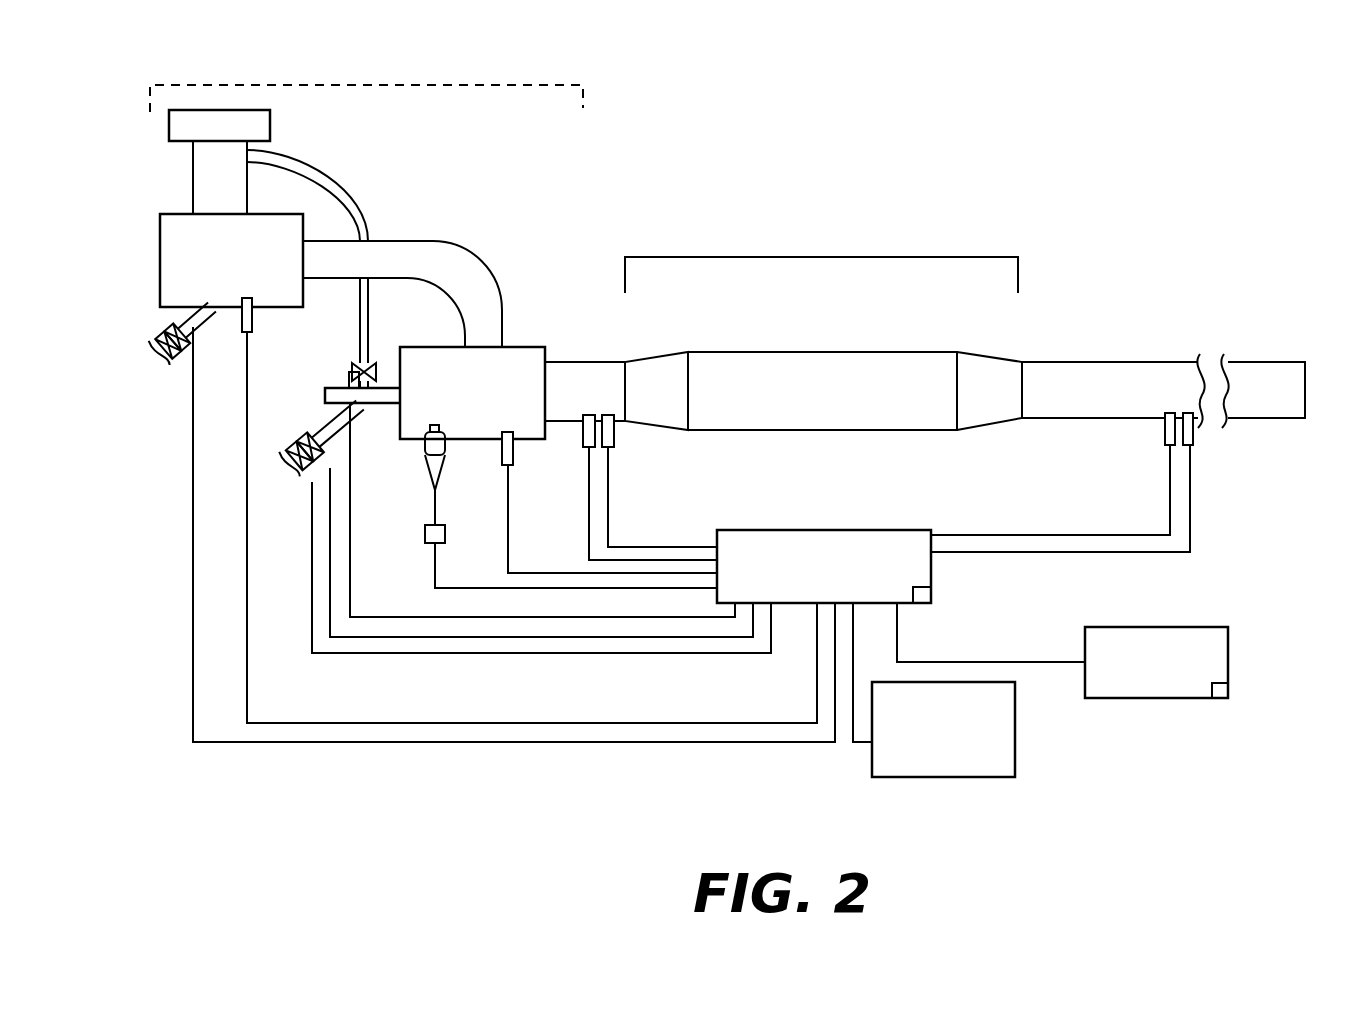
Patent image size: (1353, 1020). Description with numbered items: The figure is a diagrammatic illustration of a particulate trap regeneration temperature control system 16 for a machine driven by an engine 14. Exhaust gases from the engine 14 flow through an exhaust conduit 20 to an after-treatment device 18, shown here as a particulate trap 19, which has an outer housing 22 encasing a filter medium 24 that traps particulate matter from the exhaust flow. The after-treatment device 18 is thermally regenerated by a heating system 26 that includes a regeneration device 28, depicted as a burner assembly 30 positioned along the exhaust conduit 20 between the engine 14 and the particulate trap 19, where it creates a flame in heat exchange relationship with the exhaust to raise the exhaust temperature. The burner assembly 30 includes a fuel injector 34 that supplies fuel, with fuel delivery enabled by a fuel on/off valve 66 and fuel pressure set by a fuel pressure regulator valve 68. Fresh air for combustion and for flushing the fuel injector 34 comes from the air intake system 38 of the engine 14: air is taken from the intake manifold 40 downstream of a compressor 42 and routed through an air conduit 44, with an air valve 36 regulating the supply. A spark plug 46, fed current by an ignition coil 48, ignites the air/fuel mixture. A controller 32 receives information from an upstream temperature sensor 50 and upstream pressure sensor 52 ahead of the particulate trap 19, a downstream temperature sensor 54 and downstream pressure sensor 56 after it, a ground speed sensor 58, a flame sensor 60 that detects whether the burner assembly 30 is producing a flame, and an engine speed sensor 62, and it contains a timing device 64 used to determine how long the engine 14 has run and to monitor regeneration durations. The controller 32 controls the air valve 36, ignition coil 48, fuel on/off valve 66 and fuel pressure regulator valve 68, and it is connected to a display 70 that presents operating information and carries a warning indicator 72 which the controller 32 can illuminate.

The engine 14 is at (160, 232).
The particulate trap regeneration temperature control system 16 is at (823, 302).
The after-treatment device 18 is at (880, 257).
The particulate trap 19 is at (968, 336).
The exhaust conduit 20 is at (455, 241).
The outer housing 22 is at (820, 352).
The filter medium 24 is at (743, 431).
The heating system 26 is at (562, 85).
The regeneration device 28 is at (530, 403).
The burner assembly 30 is at (433, 347).
The controller 32 is at (860, 540).
The fuel injector 34 is at (337, 388).
The air valve 36 is at (383, 372).
The air intake system 38 is at (387, 230).
The intake manifold 40 is at (193, 180).
The compressor 42 is at (169, 118).
The air conduit 44 is at (357, 205).
The spark plug 46 is at (423, 447).
The ignition coil 48 is at (425, 533).
The upstream temperature sensor 50 is at (582, 446).
The upstream pressure sensor 52 is at (614, 446).
The downstream temperature sensor 54 is at (1165, 444).
The downstream pressure sensor 56 is at (1193, 444).
The ground speed sensor 58 is at (1016, 757).
The flame sensor 60 is at (502, 448).
The engine speed sensor 62 is at (255, 322).
The timing device 64 is at (933, 596).
The fuel on/off valve 66 is at (283, 440).
The fuel pressure regulator valve 68 is at (300, 422).
The display 70 is at (1102, 650).
The warning indicator 72 is at (1230, 690).